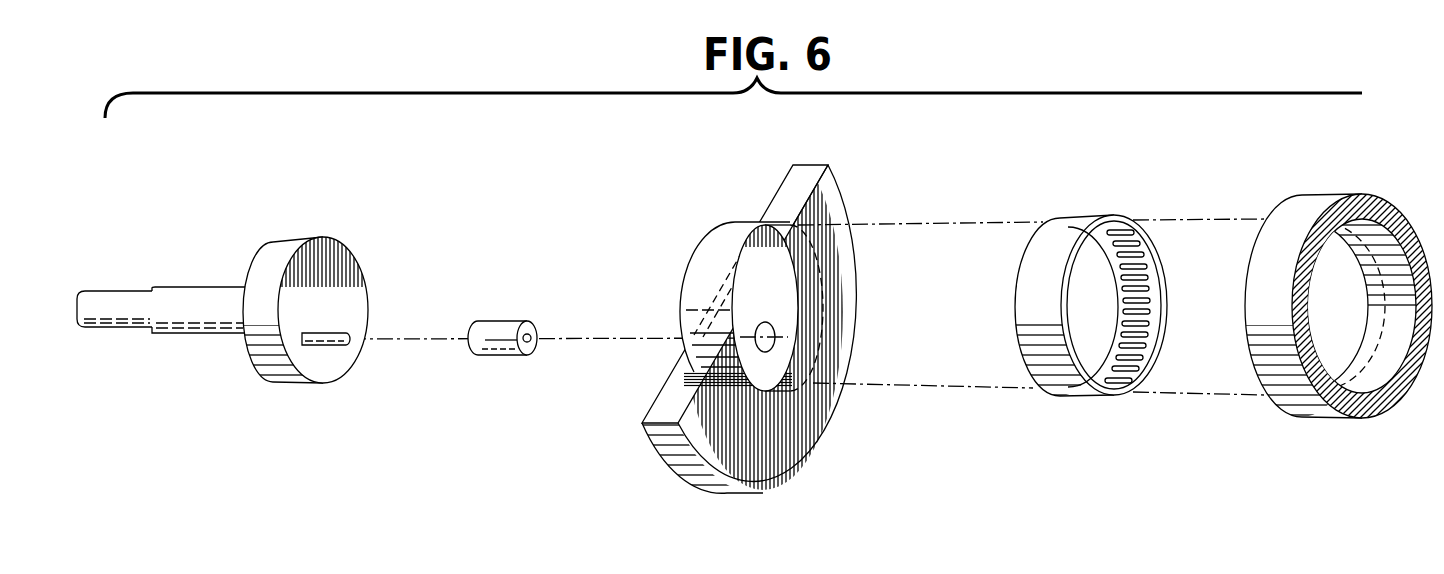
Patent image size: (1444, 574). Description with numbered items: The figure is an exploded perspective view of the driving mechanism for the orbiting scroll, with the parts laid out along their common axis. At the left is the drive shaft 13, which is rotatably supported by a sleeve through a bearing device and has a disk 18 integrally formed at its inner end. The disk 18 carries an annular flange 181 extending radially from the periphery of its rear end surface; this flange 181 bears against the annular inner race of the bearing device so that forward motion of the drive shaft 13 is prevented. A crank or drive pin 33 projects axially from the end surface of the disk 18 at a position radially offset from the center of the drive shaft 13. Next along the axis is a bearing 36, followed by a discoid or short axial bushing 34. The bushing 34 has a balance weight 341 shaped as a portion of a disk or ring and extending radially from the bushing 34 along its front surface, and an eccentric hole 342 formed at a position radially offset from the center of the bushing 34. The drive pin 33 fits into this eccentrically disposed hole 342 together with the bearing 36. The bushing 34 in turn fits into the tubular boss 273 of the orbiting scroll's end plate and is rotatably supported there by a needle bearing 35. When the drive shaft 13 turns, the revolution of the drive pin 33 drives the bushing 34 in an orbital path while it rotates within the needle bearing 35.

The drive shaft 13 is at (126, 290).
The disk 18 is at (320, 284).
The annular flange 181 is at (308, 240).
The drive pin 33 is at (330, 330).
The bearing 36 is at (507, 322).
The bushing 34 is at (766, 294).
The balance weight 341 is at (810, 444).
The eccentric hole 342 is at (765, 322).
The needle bearing 35 is at (1070, 228).
The tubular boss 273 is at (1315, 205).